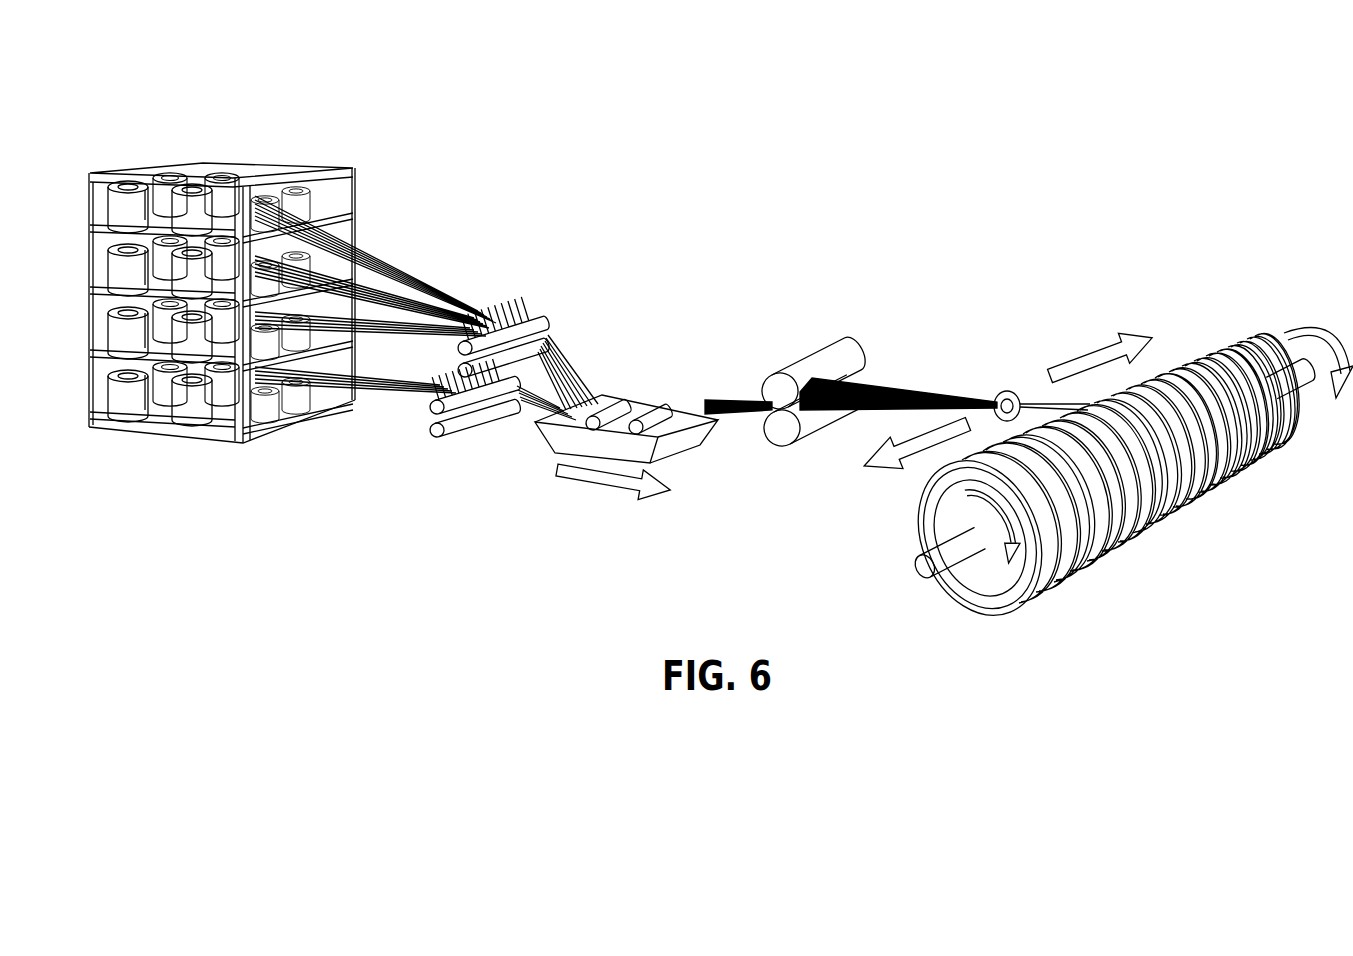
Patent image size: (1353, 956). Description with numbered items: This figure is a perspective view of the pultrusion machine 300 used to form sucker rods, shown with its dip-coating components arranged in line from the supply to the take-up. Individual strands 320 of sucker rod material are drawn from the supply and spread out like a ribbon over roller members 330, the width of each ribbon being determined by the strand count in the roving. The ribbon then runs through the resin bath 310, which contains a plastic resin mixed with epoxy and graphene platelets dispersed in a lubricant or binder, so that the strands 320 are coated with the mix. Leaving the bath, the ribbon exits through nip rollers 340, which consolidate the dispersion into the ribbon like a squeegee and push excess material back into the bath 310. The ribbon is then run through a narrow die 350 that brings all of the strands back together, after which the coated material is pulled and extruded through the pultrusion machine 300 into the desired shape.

The pultrusion machine 300 is at (762, 125).
The resin bath 310 is at (551, 457).
The strands 320 is at (393, 256).
The roller members 330 is at (123, 334).
The nip rollers 340 is at (808, 451).
The narrow die 350 is at (1003, 392).